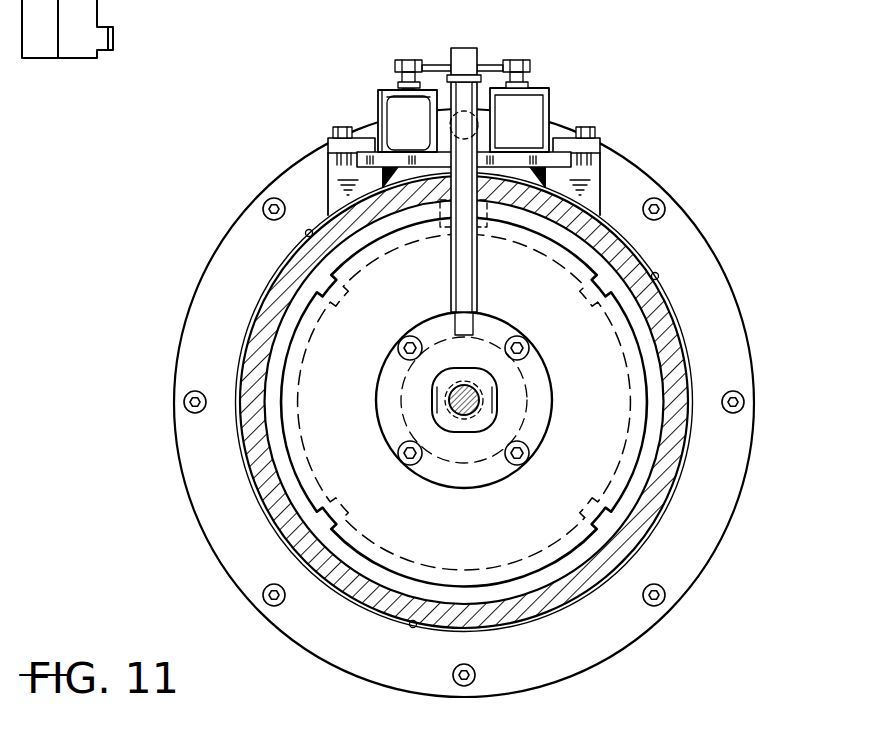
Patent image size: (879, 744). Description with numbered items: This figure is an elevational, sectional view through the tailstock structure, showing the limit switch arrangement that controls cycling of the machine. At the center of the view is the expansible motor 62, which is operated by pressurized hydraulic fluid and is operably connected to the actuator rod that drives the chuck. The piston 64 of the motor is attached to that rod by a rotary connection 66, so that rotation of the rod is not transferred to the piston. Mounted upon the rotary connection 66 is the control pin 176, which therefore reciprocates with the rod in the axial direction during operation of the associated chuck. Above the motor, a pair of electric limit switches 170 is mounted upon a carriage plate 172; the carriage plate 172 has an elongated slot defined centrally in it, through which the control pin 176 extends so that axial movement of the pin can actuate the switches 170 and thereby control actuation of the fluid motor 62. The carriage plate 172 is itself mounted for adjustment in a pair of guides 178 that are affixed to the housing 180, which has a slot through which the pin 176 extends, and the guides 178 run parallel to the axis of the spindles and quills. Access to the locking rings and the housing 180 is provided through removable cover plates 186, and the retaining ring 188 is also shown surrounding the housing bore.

The expansible motor 62 is at (554, 388).
The piston 64 is at (462, 398).
The rotary connection 66 is at (420, 323).
The electric limit switches 170 is at (403, 113).
The carriage plate 172 is at (517, 162).
The control pin 176 is at (464, 48).
The guides 178 is at (327, 144).
The housing 180 is at (642, 260).
The cover plates 186 is at (257, 303).
The retaining ring 188 is at (688, 347).